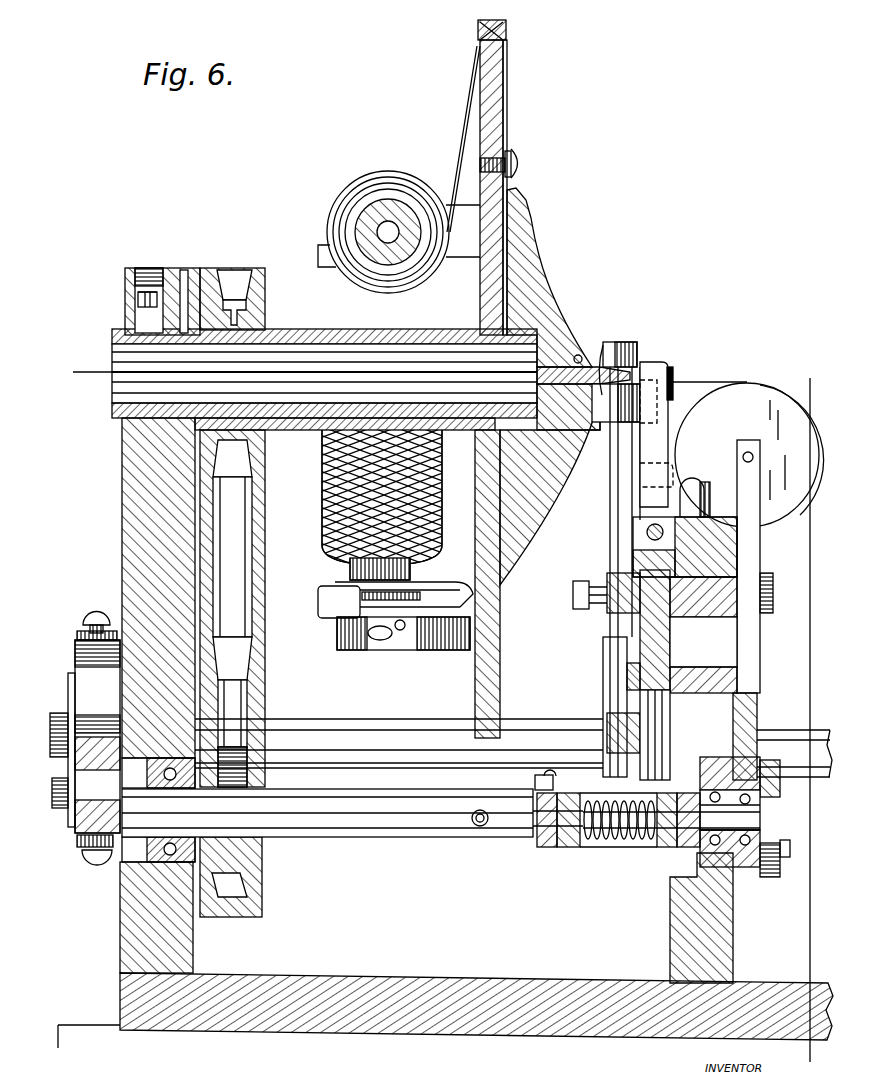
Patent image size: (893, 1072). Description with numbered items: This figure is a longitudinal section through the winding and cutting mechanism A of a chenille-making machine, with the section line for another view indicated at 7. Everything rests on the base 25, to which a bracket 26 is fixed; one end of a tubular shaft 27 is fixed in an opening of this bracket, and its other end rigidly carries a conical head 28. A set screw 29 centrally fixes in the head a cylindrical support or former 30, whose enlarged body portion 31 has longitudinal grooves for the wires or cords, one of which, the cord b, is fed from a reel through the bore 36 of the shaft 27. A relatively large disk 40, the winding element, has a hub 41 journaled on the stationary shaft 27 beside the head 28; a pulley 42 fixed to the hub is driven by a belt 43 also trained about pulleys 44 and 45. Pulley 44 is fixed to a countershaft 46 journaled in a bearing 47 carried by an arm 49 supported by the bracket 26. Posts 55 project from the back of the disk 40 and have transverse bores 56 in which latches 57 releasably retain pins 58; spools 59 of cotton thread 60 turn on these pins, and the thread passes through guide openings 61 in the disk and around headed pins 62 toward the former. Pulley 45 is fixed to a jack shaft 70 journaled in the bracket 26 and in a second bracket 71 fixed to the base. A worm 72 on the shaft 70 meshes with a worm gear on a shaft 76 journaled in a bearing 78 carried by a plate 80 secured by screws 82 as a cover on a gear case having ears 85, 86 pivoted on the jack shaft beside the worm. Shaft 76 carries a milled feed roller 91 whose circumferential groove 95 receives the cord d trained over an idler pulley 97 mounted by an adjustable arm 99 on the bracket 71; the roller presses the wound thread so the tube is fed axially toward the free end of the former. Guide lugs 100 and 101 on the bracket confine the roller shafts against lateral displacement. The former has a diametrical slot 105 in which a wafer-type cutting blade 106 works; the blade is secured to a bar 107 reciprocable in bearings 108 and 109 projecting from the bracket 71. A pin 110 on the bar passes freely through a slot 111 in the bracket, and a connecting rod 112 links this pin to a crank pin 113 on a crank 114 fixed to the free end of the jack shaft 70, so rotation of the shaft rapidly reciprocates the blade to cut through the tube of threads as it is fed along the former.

The base 25 is at (406, 1030).
The bracket 26 is at (122, 946).
The tubular shaft 27 is at (112, 410).
The conical head 28 is at (538, 250).
The set screw 29 is at (582, 352).
The cylindrical support or former 30 is at (603, 345).
The enlarged body portion 31 is at (560, 408).
The bore 36 is at (127, 387).
The disk 40 is at (500, 92).
The hub 41 is at (312, 329).
The pulley 42 is at (262, 270).
The belt 43 is at (225, 268).
The pulley 44 is at (262, 702).
The pulley 45 is at (262, 879).
The countershaft 46 is at (392, 766).
The bearing 47 is at (68, 720).
The arm 49 is at (92, 655).
The post 55 is at (444, 647).
The transverse bore 56 is at (385, 642).
The latch 57 is at (325, 604).
The pin 58 is at (386, 221).
The spool 59 is at (370, 205).
The thread 60 is at (463, 112).
The guide opening 61 is at (506, 31).
The headed pin 62 is at (520, 161).
The jack shaft 70 is at (444, 836).
The bracket 71 is at (703, 978).
The worm 72 is at (598, 849).
The shaft 76 is at (630, 343).
The bearing 78 is at (608, 657).
The plate 80 is at (540, 775).
The screw 82 is at (551, 775).
The ears 85 is at (568, 848).
The ears 86 is at (541, 848).
The feed roller 91 is at (673, 370).
The circumferential groove 95 is at (672, 380).
The idler pulley 97 is at (773, 393).
The adjustable arm 99 is at (755, 549).
The guide lug 100 is at (683, 511).
The guide lug 101 is at (606, 573).
The diametrical slot 105 is at (657, 366).
The cutting blade 106 is at (660, 362).
The bar 107 is at (624, 623).
The bearing 108 is at (585, 599).
The bearing 109 is at (627, 673).
The pin 110 is at (707, 667).
The slot 111 is at (717, 633).
The connecting rod 112 is at (757, 716).
The crank pin 113 is at (785, 858).
The crank 114 is at (740, 867).
The mechanism A is at (458, 76).
The wire or cord b is at (97, 371).
The wire or cord d is at (808, 962).
The section line 7 is at (625, 70).